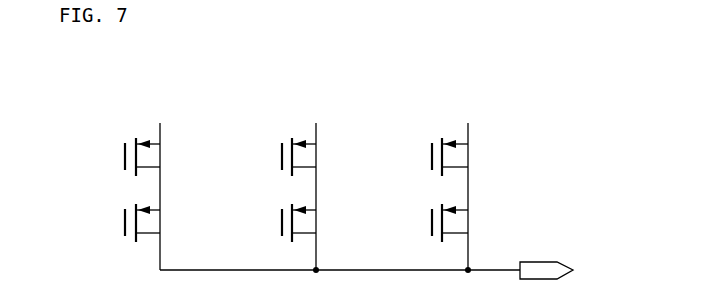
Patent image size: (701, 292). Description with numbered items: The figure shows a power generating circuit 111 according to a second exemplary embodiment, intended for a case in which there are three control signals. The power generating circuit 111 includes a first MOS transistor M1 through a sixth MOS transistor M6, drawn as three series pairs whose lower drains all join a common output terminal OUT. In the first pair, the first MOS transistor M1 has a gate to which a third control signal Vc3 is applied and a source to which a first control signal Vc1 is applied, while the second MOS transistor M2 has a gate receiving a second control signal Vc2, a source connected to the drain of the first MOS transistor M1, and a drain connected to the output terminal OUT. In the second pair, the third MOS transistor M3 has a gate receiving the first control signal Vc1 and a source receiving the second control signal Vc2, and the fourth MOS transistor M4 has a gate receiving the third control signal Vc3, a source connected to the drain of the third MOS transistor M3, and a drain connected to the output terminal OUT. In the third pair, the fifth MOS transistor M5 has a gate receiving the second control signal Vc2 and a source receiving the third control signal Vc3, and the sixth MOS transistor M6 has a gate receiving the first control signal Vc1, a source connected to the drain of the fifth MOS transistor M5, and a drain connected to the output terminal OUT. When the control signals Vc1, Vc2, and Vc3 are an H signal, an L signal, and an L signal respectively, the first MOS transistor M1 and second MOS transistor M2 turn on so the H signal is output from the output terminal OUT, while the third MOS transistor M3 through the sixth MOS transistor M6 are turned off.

The power generating circuit 111 is at (95, 69).
The first MOS transistor M1 is at (137, 169).
The second MOS transistor M2 is at (137, 235).
The third MOS transistor M3 is at (293, 169).
The fourth MOS transistor M4 is at (293, 235).
The fifth MOS transistor M5 is at (445, 169).
The sixth MOS transistor M6 is at (445, 235).
The first control signal Vc1 is at (432, 222).
The second control signal Vc2 is at (80, 222).
The third control signal Vc3 is at (80, 156).
The output terminal OUT is at (570, 271).